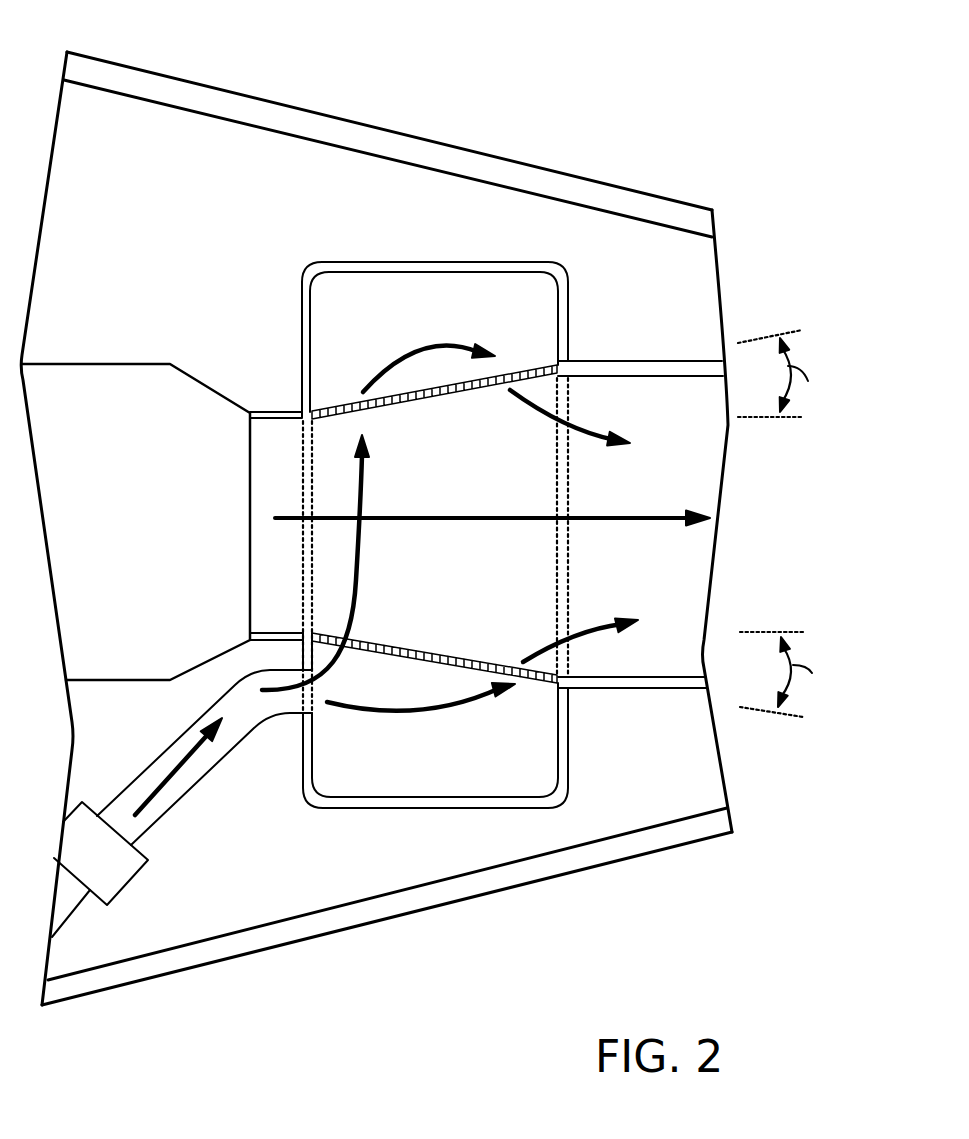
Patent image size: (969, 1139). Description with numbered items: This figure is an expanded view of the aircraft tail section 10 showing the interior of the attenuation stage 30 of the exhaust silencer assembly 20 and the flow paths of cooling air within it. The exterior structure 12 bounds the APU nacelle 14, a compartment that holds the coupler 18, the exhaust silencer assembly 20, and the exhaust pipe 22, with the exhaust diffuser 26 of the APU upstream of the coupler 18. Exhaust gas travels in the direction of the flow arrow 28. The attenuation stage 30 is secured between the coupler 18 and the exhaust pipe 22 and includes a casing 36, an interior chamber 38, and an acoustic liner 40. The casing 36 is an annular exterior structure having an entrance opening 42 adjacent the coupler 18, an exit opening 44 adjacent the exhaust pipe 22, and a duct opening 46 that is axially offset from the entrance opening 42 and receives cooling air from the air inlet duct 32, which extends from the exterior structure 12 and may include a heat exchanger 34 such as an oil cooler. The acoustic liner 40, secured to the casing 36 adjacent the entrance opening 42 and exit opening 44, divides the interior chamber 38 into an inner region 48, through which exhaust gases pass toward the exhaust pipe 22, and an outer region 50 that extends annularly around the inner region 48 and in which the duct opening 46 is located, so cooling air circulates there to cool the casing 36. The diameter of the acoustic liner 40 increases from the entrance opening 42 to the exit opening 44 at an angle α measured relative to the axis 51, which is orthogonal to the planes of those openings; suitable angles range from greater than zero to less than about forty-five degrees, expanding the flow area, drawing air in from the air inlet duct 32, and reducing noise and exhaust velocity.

The aircraft tail section 10 is at (560, 66).
The exterior structure 12 is at (315, 113).
The APU nacelle 14 is at (170, 134).
The coupler 18 is at (257, 410).
The exhaust silencer assembly 20 is at (318, 878).
The exhaust pipe 22 is at (588, 365).
The exhaust diffuser 26 is at (148, 395).
The flow arrow 28 is at (605, 517).
The attenuation stage 30 is at (436, 250).
The air inlet duct 32 is at (187, 788).
The heat exchanger 34 is at (120, 875).
The casing 36 is at (344, 263).
The interior chamber 38 is at (540, 305).
The acoustic liner 40 is at (414, 403).
The entrance opening 42 is at (296, 431).
The exit opening 44 is at (578, 663).
The duct opening 46 is at (324, 719).
The inner region 48 is at (473, 575).
The outer region 50 is at (351, 325).
The axis 51 is at (755, 417).